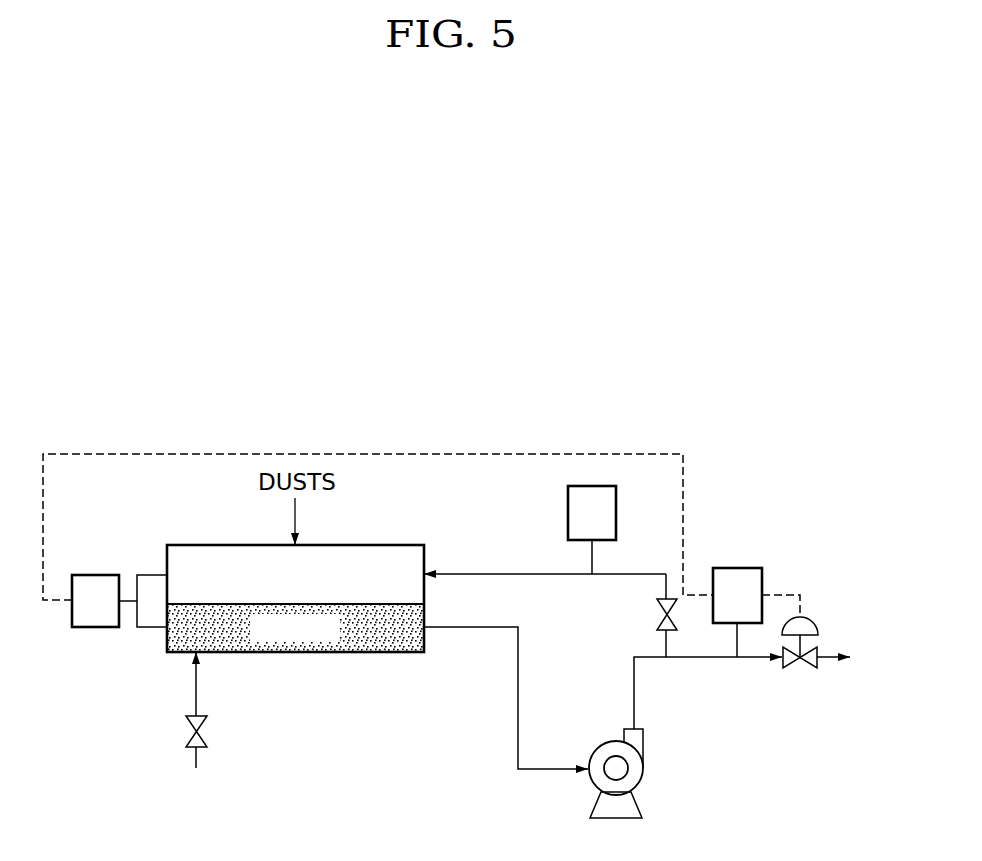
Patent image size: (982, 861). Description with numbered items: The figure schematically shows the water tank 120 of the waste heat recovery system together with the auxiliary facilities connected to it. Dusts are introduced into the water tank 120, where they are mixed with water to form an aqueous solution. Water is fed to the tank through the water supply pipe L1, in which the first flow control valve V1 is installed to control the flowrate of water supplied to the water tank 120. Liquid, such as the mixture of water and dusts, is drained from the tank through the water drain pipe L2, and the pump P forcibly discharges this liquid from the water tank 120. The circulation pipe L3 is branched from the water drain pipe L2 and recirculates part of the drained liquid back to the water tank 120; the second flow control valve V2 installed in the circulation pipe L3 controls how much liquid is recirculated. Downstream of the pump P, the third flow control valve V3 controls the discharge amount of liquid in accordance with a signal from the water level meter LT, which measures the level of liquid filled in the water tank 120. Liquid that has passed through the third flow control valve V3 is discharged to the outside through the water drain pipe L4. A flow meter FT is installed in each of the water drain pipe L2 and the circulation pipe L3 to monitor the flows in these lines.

The water tank 120 is at (362, 527).
The water level meter LT is at (119, 601).
The flow meter FT is at (665, 571).
The water supply pipe L1 is at (198, 727).
The water drain pipe L2 is at (506, 684).
The circulation pipe L3 is at (545, 572).
The water drain pipe L4 is at (849, 659).
The first flow control valve V1 is at (184, 727).
The second flow control valve V2 is at (655, 612).
The third flow control valve V3 is at (798, 676).
The pump P is at (650, 783).